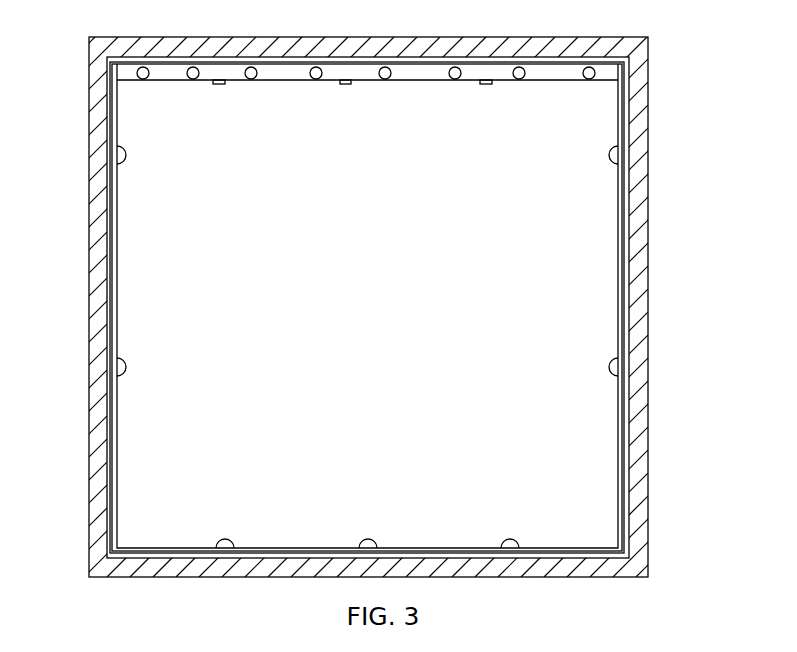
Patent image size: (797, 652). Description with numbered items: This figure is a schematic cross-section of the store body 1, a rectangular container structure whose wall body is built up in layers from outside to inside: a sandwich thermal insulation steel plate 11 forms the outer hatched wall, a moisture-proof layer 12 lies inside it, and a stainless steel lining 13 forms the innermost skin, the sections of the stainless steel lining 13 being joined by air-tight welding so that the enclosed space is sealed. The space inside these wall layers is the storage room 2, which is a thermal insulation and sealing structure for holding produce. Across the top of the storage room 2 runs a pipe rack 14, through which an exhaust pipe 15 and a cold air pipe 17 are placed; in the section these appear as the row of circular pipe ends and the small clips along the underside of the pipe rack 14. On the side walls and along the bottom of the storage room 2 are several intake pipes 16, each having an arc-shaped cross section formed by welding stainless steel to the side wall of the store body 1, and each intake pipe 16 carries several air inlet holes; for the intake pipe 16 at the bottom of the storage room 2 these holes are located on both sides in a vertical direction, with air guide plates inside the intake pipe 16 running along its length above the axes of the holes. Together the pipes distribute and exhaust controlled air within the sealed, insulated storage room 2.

The store body 1 is at (648, 428).
The storage room 2 is at (171, 310).
The sandwich thermal insulation steel plate 11 is at (637, 282).
The moisture-proof layer 12 is at (625, 249).
The stainless steel lining 13 is at (620, 222).
The pipe rack 14 is at (419, 74).
The exhaust pipe 15 is at (316, 79).
The intake pipe 16 is at (612, 372).
The cold air pipe 17 is at (484, 84).